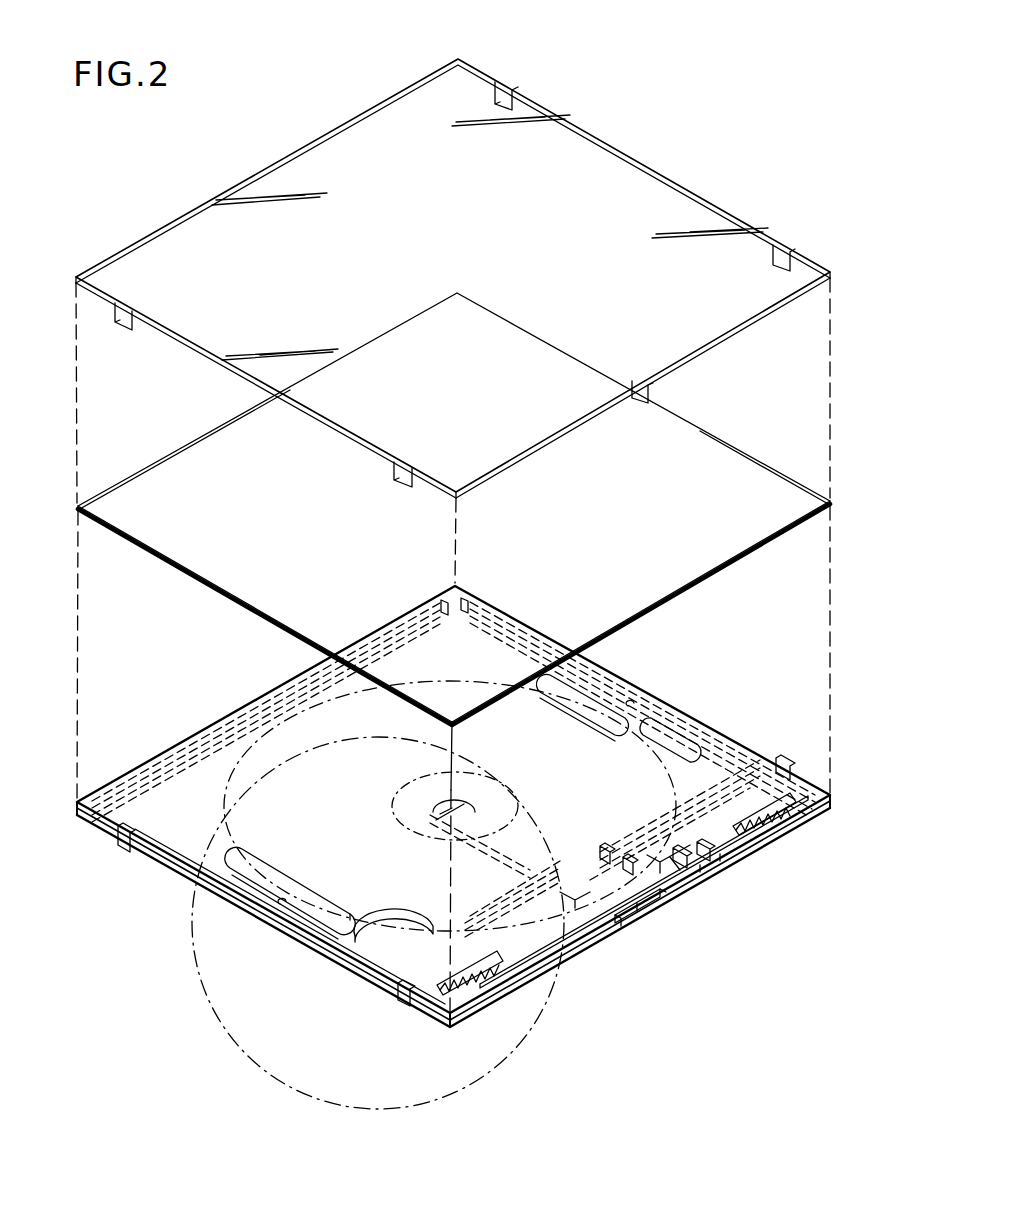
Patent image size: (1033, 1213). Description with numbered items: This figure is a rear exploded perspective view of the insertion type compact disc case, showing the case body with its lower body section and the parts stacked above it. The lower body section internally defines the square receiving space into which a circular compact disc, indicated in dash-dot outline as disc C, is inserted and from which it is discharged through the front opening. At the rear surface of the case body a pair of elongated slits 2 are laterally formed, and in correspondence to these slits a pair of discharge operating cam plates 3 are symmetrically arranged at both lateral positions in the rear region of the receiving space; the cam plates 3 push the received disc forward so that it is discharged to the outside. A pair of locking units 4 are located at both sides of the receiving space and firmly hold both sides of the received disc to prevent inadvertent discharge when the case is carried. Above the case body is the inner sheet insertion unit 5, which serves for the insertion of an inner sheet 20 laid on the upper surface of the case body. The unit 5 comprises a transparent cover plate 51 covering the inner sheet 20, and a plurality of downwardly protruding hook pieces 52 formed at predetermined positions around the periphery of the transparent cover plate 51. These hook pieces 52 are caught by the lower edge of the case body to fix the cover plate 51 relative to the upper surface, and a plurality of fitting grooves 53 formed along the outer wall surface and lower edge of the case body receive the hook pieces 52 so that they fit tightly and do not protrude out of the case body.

The elongated slits 2 is at (692, 895).
The discharge operating cam plates 3 is at (758, 858).
The locking units 4 is at (649, 718).
The inner sheet insertion unit 5 is at (430, 413).
The inner sheet 20 is at (765, 494).
The transparent cover plate 51 is at (585, 181).
The downwardly protruding hook pieces 52 is at (530, 102).
The fitting grooves 53 is at (780, 763).
The disc C is at (462, 1094).